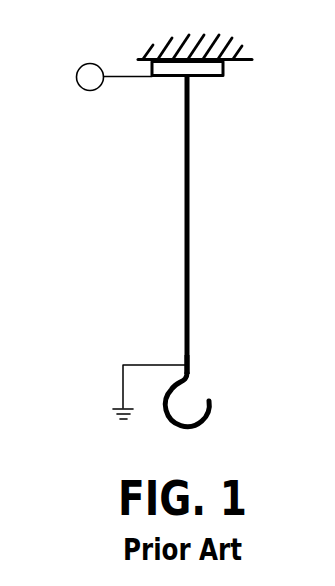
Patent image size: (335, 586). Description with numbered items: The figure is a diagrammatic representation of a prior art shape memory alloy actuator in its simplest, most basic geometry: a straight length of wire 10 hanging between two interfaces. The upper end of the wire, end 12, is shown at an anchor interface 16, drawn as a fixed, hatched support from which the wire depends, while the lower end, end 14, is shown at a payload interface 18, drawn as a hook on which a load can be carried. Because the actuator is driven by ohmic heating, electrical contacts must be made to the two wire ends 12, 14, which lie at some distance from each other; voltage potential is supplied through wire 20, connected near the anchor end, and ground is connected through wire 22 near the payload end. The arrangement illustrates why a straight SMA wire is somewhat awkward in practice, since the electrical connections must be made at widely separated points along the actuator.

The wire 10 is at (190, 197).
The wire end 12 is at (176, 77).
The wire end 14 is at (183, 362).
The anchor interface 16 is at (233, 66).
The payload interface 18 is at (203, 418).
The wire 20 is at (130, 76).
The wire 22 is at (140, 363).